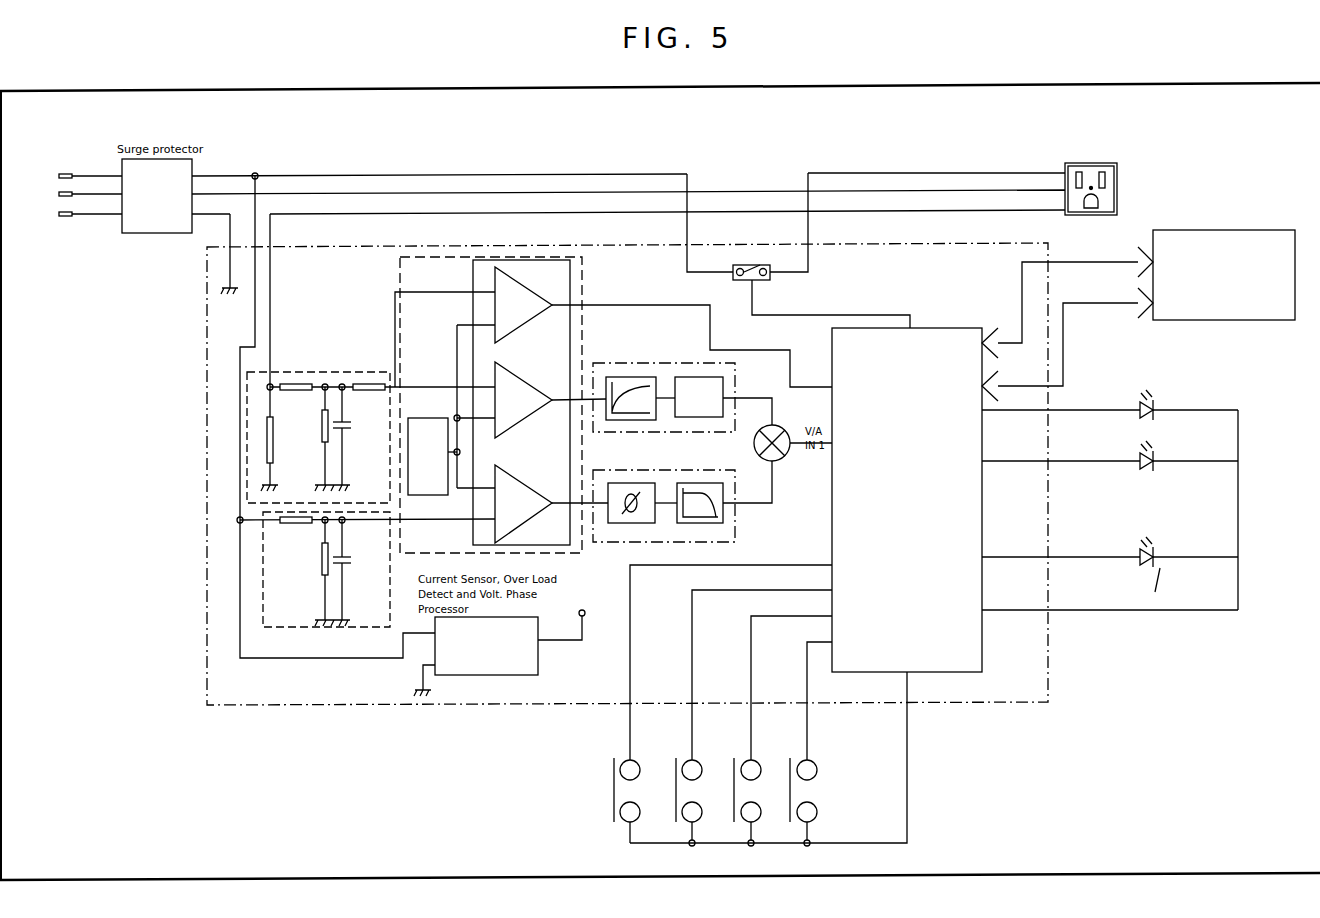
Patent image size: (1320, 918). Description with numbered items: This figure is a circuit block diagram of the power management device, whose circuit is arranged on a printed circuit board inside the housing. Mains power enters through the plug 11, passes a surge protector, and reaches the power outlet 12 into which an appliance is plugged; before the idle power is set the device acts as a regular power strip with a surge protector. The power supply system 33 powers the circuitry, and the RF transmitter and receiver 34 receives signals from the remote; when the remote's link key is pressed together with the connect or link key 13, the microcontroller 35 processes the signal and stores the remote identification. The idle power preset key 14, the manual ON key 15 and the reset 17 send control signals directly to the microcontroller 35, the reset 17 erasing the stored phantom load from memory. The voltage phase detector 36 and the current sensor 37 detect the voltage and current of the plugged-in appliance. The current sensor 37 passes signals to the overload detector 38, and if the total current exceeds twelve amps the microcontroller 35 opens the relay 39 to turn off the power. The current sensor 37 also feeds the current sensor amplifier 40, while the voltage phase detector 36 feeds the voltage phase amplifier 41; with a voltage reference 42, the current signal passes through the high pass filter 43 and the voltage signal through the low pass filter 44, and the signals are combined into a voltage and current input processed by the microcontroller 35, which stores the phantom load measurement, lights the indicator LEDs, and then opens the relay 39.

The plug 11 is at (76, 188).
The power outlet 12 is at (1125, 179).
The connect or link key 13 is at (614, 790).
The idle power preset key 14 is at (676, 790).
The manual ON key 15 is at (734, 790).
The reset 17 is at (790, 790).
The power supply system 33 is at (499, 662).
The RF transmitter and receiver 34 is at (1250, 222).
The microcontroller 35 is at (907, 500).
The voltage phase detector 36 is at (366, 603).
The current sensor 37 is at (371, 411).
The overload detector 38 is at (613, 325).
The relay 39 is at (798, 250).
The current sensor amplifier 40 is at (550, 398).
The voltage phase amplifier 41 is at (551, 503).
The voltage reference 42 is at (451, 410).
The high pass filter 43 is at (682, 385).
The low pass filter 44 is at (682, 493).